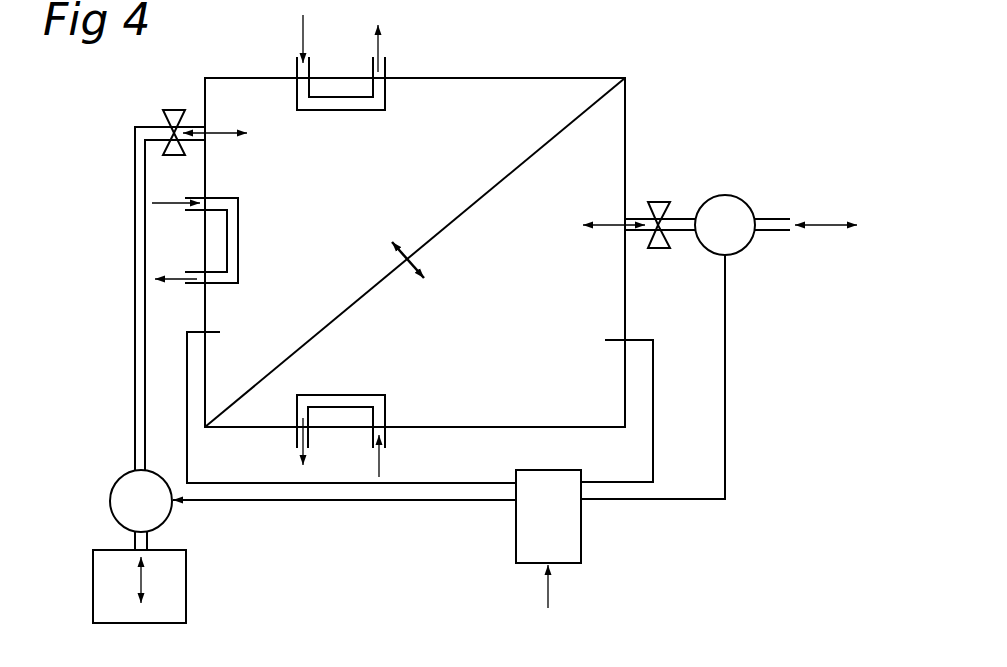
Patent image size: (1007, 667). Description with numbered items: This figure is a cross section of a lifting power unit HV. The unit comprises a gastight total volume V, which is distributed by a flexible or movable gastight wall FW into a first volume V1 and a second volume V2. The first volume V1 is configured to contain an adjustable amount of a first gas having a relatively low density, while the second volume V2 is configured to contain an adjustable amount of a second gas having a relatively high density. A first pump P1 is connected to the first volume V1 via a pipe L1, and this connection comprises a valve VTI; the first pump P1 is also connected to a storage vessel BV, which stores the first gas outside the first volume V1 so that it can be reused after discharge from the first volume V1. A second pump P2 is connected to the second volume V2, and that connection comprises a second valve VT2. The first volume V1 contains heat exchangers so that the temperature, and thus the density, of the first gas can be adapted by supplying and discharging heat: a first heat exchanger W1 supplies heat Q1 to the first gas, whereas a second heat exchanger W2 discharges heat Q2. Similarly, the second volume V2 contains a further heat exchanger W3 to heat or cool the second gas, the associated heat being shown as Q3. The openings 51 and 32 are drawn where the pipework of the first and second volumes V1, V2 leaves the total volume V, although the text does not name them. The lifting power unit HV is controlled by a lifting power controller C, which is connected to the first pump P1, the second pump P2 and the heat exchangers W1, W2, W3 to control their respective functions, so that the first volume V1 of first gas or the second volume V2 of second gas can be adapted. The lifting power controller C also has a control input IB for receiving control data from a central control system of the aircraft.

The lifting power unit HV is at (547, 70).
The gastight total volume V is at (625, 127).
The flexible or movable gastight wall FW is at (468, 210).
The first volume V1 is at (368, 203).
The second volume V2 is at (500, 343).
The valve VTI is at (168, 117).
The second valve VT2 is at (665, 208).
The pipe L1 is at (142, 237).
The first heat exchanger W1 is at (218, 280).
The second heat exchanger W2 is at (380, 85).
The further heat exchanger W3 is at (380, 415).
The heat Q1 is at (238, 252).
The heat Q2 is at (330, 110).
The heat Q3 is at (338, 392).
The outlet pipe 51 is at (215, 331).
The outlet pipe 32 is at (613, 338).
The first pump P1 is at (313, 501).
The second pump P2 is at (719, 347).
The storage vessel BV is at (165, 588).
The lifting power controller C is at (548, 516).
The control input IB is at (548, 588).